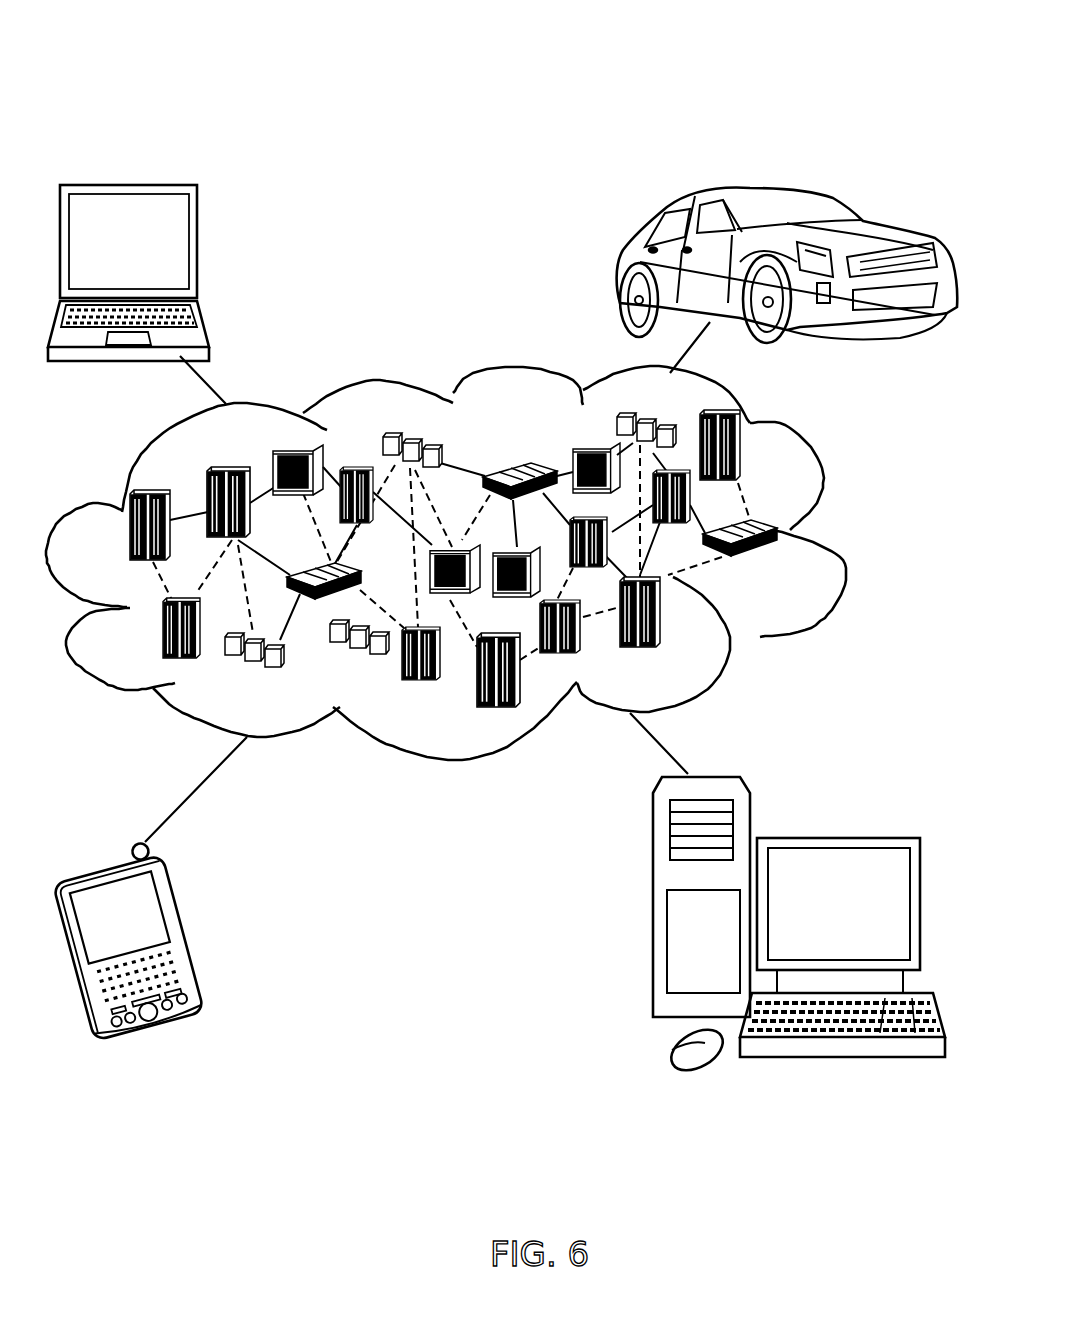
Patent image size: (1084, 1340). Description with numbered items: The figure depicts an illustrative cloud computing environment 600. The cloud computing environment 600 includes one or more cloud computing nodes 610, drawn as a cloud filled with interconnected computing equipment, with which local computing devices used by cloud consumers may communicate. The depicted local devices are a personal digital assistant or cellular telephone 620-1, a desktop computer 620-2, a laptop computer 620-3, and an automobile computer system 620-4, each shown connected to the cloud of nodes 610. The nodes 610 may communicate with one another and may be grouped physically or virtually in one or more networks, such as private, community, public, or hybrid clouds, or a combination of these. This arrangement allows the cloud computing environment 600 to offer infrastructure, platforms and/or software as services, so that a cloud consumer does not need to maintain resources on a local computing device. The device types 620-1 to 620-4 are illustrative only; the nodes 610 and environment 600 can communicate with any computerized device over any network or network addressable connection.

The cloud computing environment 600 is at (774, 48).
The cloud computing nodes 610 is at (776, 565).
The personal digital assistant or cellular telephone 620-1 is at (184, 938).
The desktop computer 620-2 is at (853, 813).
The laptop computer 620-3 is at (197, 249).
The automobile computer system 620-4 is at (617, 266).